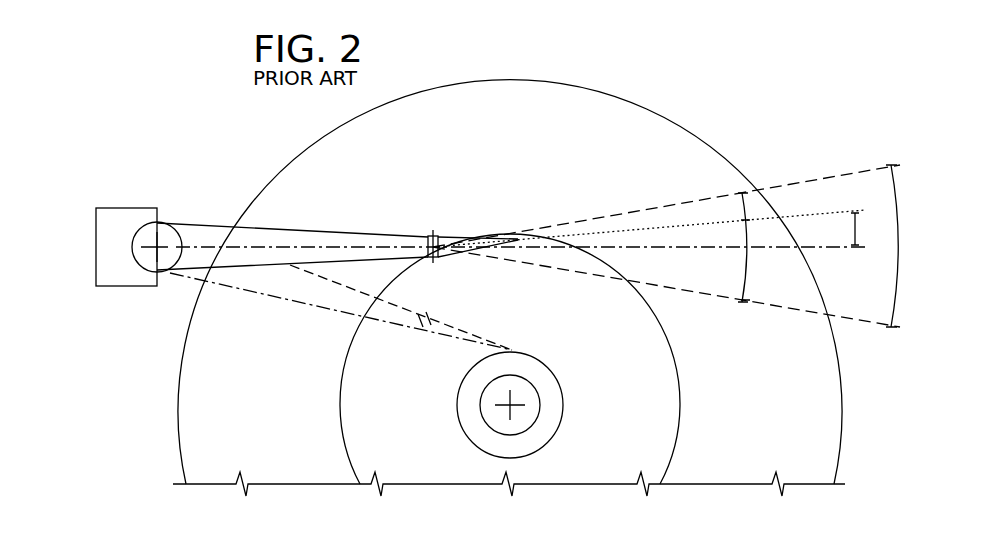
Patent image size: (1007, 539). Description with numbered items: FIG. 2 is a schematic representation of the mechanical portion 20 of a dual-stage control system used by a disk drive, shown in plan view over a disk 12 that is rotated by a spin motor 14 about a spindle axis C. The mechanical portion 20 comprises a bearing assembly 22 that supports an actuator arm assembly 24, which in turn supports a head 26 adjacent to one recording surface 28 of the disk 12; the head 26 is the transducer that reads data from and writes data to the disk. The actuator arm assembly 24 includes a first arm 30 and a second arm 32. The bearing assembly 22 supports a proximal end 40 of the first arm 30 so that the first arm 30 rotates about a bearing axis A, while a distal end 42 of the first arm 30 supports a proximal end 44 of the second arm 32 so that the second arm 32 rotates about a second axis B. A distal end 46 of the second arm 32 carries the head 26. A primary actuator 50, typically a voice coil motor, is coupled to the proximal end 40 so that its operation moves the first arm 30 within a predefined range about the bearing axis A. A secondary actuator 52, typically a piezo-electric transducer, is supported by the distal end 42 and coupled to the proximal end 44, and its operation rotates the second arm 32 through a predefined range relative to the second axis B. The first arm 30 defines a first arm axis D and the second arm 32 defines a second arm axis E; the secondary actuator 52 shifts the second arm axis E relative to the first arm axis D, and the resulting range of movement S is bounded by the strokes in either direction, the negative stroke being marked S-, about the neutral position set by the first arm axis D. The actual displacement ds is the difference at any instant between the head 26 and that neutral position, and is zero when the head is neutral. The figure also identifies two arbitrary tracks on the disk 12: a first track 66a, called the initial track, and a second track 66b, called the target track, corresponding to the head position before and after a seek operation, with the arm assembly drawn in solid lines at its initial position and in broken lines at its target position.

The disk 12 is at (553, 102).
The spin motor 14 is at (490, 398).
The mechanical portion 20 is at (189, 160).
The bearing assembly 22 is at (160, 236).
The actuator arm assembly 24 is at (330, 216).
The head 26 is at (518, 239).
The recording surface 28 is at (524, 156).
The first arm 30 is at (262, 234).
The second arm 32 is at (478, 250).
The proximal end of the first arm 40 is at (194, 216).
The distal end of the first arm 42 is at (424, 235).
The proximal end of the second arm 44 is at (442, 237).
The distal end of the second arm 46 is at (507, 233).
The primary actuator 50 is at (118, 217).
The secondary actuator 52 is at (431, 234).
The first track 66a is at (341, 404).
The second track 66b is at (458, 419).
The bearing axis A is at (155, 256).
The second axis B is at (437, 256).
The spindle axis C is at (508, 407).
The first arm axis D is at (836, 249).
The second arm axis E is at (828, 211).
The range of movement S is at (894, 246).
The stroke S- is at (746, 270).
The actual displacement ds is at (850, 228).